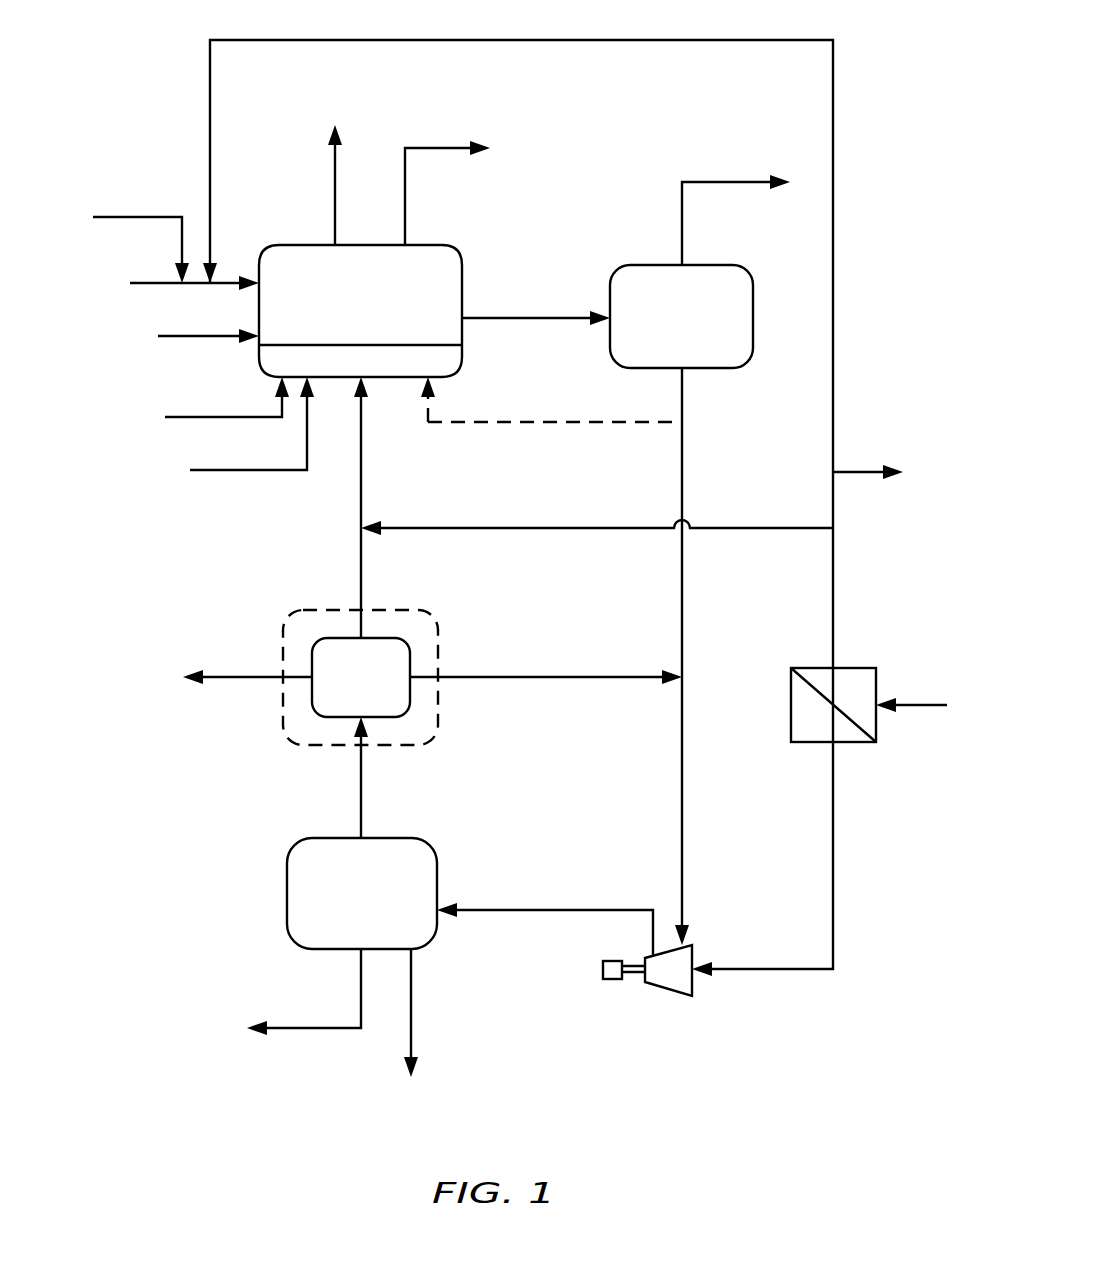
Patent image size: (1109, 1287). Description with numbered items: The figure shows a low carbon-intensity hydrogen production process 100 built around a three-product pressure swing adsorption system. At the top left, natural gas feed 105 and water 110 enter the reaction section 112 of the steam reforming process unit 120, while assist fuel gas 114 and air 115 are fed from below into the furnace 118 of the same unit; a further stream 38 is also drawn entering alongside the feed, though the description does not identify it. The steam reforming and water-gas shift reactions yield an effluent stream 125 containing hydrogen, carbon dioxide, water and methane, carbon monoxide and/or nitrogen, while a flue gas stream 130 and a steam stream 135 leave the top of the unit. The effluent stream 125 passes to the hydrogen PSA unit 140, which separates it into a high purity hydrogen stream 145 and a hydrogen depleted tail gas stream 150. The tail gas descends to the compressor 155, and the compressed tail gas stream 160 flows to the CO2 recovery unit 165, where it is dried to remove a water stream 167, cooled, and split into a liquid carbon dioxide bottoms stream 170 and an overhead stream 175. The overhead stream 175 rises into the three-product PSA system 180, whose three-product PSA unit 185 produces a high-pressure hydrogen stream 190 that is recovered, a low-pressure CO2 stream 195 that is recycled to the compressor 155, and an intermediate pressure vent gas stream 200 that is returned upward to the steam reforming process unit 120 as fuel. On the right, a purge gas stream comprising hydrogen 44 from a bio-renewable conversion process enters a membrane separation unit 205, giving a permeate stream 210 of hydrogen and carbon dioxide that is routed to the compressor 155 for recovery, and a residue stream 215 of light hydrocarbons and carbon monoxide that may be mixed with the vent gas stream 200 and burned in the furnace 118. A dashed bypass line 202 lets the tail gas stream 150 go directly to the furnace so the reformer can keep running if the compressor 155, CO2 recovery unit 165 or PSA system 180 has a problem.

The hydrogen production process 100 is at (125, 72).
The stream 38 is at (93, 217).
The natural gas feed 105 is at (150, 283).
The water 110 is at (175, 336).
The reaction section 112 is at (437, 262).
The assist fuel gas 114 is at (176, 417).
The air 115 is at (202, 470).
The furnace 118 is at (452, 358).
The steam reforming process unit 120 is at (384, 291).
The effluent stream 125 is at (540, 318).
The flue gas stream 130 is at (333, 184).
The steam stream 135 is at (450, 148).
The hydrogen PSA unit 140 is at (664, 265).
The high purity hydrogen stream 145 is at (738, 182).
The hydrogen depleted tail gas stream 150 is at (683, 586).
The compressor 155 is at (666, 993).
The compressed tail gas stream 160 is at (580, 910).
The CO2 recovery unit 165 is at (312, 838).
The water stream 167 is at (412, 1013).
The bottoms stream 170 is at (305, 1028).
The overhead stream 175 is at (362, 795).
The three-product PSA system 180 is at (408, 610).
The three-product PSA unit 185 is at (345, 650).
The high-pressure hydrogen stream 190 is at (232, 677).
The low-pressure CO2 stream 195 is at (531, 677).
The intermediate pressure vent gas stream 200 is at (362, 470).
The bypass line 202 is at (568, 422).
The membrane separation unit 205 is at (858, 668).
The permeate stream 210 is at (834, 856).
The residue stream 215 is at (834, 578).
The purge gas stream comprising hydrogen 44 is at (920, 705).